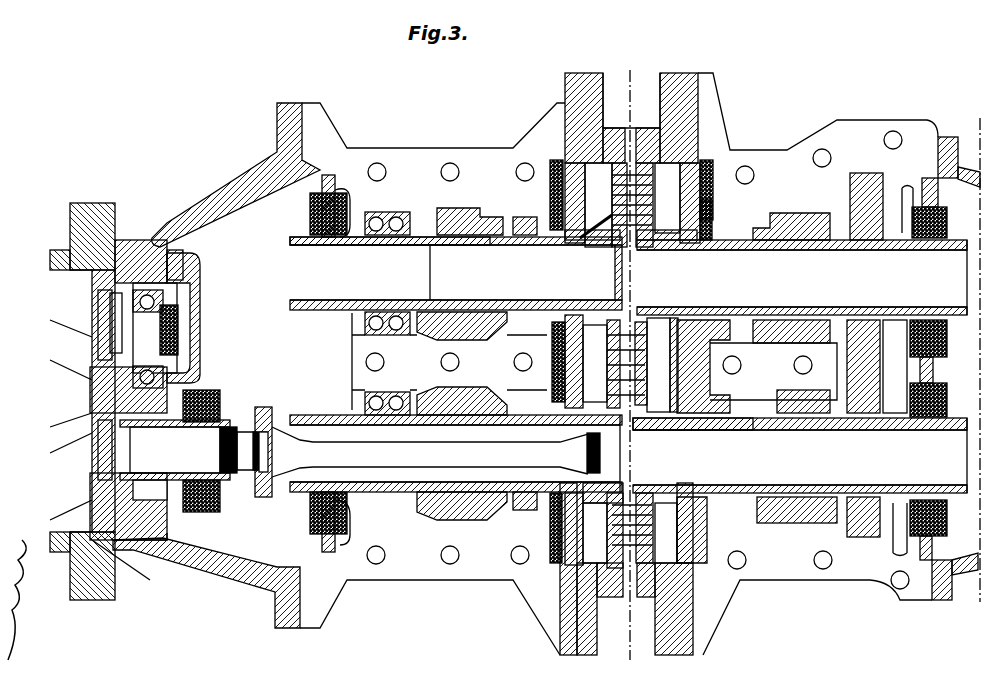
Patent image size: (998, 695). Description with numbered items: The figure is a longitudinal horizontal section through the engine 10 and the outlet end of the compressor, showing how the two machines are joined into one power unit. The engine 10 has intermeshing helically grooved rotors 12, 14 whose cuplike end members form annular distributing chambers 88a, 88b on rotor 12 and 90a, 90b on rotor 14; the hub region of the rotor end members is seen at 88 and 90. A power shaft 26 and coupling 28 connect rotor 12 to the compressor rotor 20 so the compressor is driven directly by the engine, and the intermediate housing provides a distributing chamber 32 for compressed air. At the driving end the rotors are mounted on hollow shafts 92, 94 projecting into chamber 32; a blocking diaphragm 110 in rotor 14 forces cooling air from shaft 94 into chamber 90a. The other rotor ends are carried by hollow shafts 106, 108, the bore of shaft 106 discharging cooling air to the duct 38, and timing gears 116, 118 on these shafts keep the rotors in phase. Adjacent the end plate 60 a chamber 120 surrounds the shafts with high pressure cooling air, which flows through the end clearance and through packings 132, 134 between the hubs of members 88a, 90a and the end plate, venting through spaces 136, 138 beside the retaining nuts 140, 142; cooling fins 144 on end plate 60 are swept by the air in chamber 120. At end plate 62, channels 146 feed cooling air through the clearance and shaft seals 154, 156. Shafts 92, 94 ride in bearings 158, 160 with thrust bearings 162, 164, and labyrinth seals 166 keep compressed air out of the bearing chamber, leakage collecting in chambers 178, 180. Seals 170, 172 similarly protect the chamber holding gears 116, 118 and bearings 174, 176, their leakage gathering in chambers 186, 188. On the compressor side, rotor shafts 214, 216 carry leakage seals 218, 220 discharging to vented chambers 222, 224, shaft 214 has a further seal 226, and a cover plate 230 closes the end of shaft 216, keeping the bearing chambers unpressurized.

The engine 10 is at (626, 128).
The rotor 12 is at (622, 565).
The rotor 14 is at (626, 128).
The compressor rotor 20 is at (60, 470).
The power shaft 26 is at (480, 460).
The coupling 28 is at (264, 405).
The distributing chamber 32 is at (222, 195).
The duct 38 is at (927, 368).
The end plate 60 is at (582, 73).
The end plate 62 is at (690, 73).
The lower coupling space 88 is at (650, 510).
The annular distributing chamber 88a is at (572, 600).
The annular distributing chamber 88b is at (660, 600).
The spline coupling 90 is at (642, 200).
The annular distributing chamber 90a is at (556, 165).
The annular distributing chamber 90b is at (708, 170).
The hollow shaft 92 is at (425, 528).
The hollow shaft 94 is at (428, 225).
The hollow shaft 106 is at (740, 485).
The hollow shaft 108 is at (800, 315).
The blocking diaphragm 110 is at (614, 288).
The timing gear 116 is at (830, 520).
The timing gear 118 is at (866, 180).
The chamber 120 is at (548, 170).
The packing 132 is at (528, 422).
The packing 134 is at (575, 240).
The venting space 136 is at (530, 510).
The venting space 138 is at (535, 248).
The retaining nut 140 is at (505, 510).
The retaining nut 142 is at (500, 245).
The cooling fins 144 is at (570, 560).
The channel 146 is at (742, 160).
The shaft seal 154 is at (685, 420).
The shaft seal 156 is at (685, 242).
The bearing 158 is at (490, 340).
The bearing 160 is at (470, 210).
The thrust bearing 162 is at (390, 418).
The thrust bearing 164 is at (390, 336).
The seal 166 is at (335, 200).
The seal 170 is at (947, 520).
The seal 172 is at (935, 207).
The bearing 174 is at (795, 390).
The bearing 176 is at (795, 228).
The chamber 178 is at (350, 540).
The chamber 180 is at (352, 195).
The chamber 186 is at (893, 545).
The chamber 188 is at (906, 188).
The rotor shaft 214 is at (222, 400).
The rotor shaft 216 is at (160, 310).
The leakage type seal 218 is at (60, 410).
The leakage type seal 220 is at (92, 345).
The vented chamber 222 is at (128, 500).
The vented chamber 224 is at (125, 290).
The leakage type seal 226 is at (220, 505).
The cover plate 230 is at (200, 322).